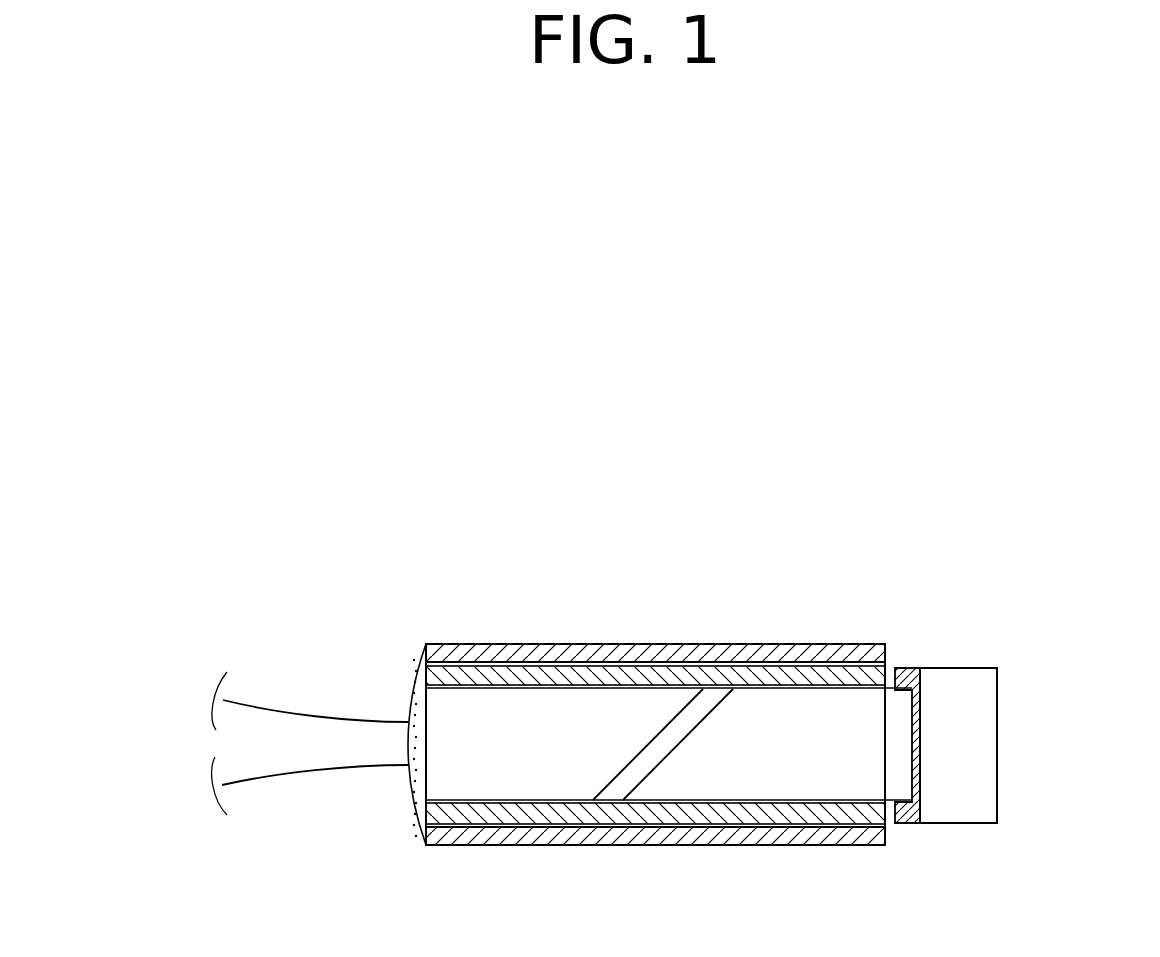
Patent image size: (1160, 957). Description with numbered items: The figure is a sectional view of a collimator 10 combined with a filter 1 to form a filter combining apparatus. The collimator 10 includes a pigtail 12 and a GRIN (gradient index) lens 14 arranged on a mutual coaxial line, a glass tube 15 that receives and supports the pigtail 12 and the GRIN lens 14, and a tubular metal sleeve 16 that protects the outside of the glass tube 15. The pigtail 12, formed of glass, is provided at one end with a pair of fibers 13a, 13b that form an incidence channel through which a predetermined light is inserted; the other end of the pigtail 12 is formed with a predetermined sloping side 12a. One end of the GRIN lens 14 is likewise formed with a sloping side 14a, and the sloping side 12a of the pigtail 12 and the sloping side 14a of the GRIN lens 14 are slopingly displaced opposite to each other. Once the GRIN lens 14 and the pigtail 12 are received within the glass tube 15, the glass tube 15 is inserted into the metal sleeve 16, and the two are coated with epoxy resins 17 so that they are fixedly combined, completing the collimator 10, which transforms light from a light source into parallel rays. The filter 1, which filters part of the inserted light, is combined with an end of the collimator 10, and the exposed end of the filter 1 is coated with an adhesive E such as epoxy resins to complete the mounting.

The collimator 10 is at (922, 556).
The filter 1 is at (968, 817).
The adhesive E is at (910, 817).
The pigtail 12 is at (564, 821).
The sloping side 12a is at (613, 775).
The GRIN lens 14 is at (754, 821).
The sloping side 14a is at (647, 777).
The glass tube 15 is at (635, 660).
The metal sleeve 16 is at (802, 645).
The epoxy resins 17 is at (408, 712).
The fiber 13a is at (268, 710).
The fiber 13b is at (363, 772).